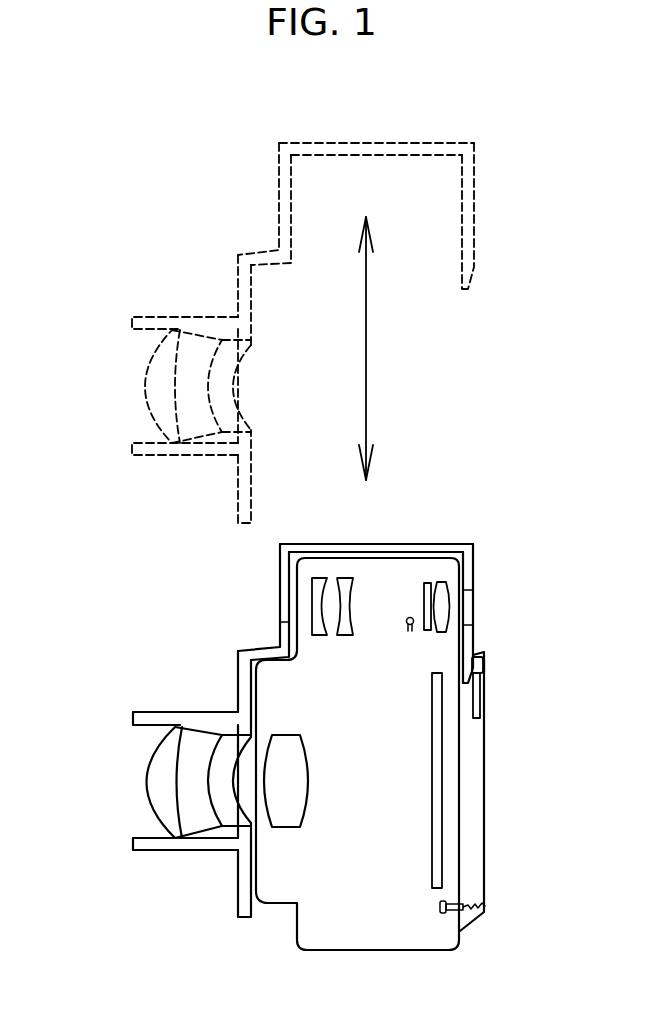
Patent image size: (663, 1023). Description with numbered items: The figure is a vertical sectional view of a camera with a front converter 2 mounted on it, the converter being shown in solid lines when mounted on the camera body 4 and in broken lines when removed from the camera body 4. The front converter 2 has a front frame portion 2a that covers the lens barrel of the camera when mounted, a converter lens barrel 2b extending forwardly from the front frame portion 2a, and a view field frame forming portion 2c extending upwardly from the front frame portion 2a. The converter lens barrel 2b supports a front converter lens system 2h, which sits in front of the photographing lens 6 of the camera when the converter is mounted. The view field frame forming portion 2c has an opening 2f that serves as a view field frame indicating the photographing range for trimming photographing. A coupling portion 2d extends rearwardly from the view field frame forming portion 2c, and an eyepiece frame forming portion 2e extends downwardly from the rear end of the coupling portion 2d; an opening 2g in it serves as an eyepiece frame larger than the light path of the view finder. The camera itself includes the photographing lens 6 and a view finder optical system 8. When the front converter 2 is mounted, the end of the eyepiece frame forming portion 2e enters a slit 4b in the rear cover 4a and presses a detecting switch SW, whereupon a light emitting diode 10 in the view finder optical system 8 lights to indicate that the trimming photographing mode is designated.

The front converter 2 is at (277, 142).
The front frame portion 2a is at (238, 283).
The converter lens barrel 2b is at (175, 317).
The view field frame forming portion 2c is at (278, 196).
The coupling portion 2d is at (367, 142).
The eyepiece frame forming portion 2e is at (476, 178).
The opening 2f is at (291, 212).
The opening 2g is at (462, 208).
The front converter lens system 2h is at (145, 395).
The camera body 4 is at (390, 937).
The rear cover 4a is at (477, 758).
The slit 4b is at (479, 650).
The photographing lens 6 is at (290, 822).
The view finder optical system 8 is at (445, 641).
The light emitting diode 10 is at (408, 615).
The detecting switch SW is at (485, 673).